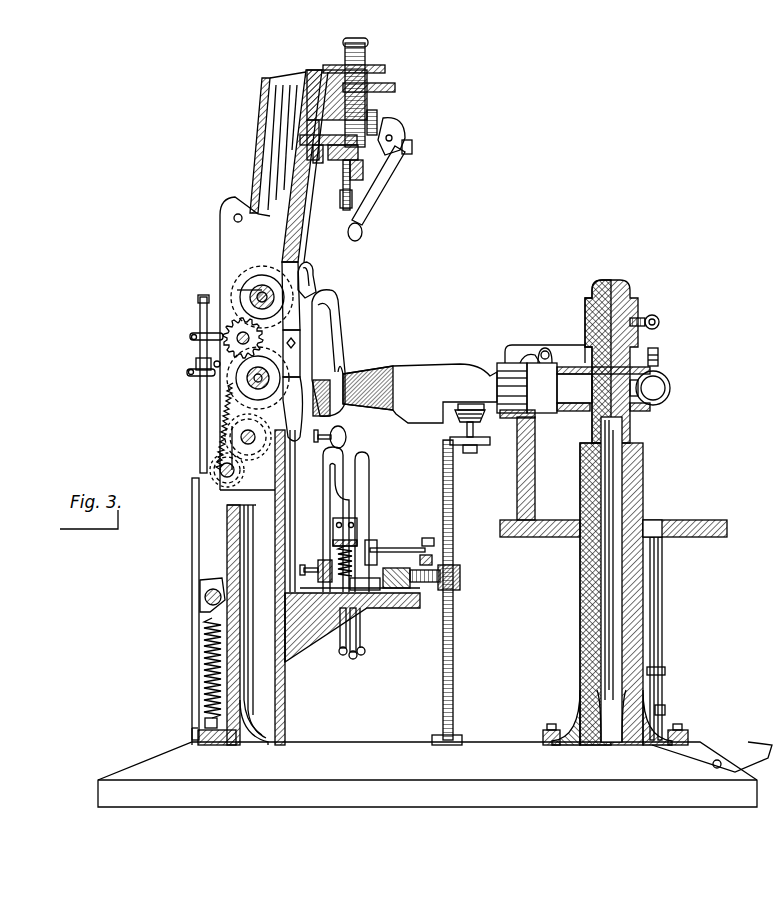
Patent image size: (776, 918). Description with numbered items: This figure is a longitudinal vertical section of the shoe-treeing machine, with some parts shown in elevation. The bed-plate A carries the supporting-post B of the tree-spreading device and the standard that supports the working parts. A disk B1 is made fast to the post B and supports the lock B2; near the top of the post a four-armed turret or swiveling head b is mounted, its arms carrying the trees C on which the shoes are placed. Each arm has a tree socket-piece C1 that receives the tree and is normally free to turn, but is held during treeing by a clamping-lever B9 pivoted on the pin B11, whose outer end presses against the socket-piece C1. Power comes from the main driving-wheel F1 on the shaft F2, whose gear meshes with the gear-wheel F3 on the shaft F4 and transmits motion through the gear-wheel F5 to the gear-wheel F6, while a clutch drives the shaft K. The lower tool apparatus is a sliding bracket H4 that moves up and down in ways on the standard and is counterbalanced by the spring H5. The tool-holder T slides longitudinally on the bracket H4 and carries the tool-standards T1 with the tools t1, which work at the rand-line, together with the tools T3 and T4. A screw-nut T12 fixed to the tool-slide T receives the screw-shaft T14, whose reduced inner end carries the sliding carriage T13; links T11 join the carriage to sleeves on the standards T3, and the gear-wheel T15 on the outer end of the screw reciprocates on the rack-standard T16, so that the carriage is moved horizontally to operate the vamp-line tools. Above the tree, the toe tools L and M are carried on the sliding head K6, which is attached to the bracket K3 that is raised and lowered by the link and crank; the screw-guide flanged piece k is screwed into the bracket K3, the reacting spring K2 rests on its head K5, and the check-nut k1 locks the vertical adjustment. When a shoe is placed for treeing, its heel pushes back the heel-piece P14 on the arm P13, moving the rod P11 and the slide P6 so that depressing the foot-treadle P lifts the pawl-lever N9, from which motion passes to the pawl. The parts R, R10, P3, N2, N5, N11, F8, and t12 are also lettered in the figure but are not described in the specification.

The bed-plate A is at (435, 774).
The supporting-post B is at (615, 512).
The disk B1 is at (712, 522).
The lock B2 is at (575, 441).
The clamping-lever B9 is at (532, 348).
The pin B11 is at (548, 350).
The four-armed turret or swiveling head b is at (645, 408).
The tree C is at (420, 408).
The tree socket-piece C1 is at (503, 366).
The arm R is at (312, 292).
The finger R10 is at (316, 278).
The foot-treadle P is at (293, 385).
The rod P11 is at (330, 322).
The arm P13 is at (338, 342).
The heel-piece P14 is at (320, 384).
The slide P6 is at (222, 360).
The rod P3 is at (200, 568).
The shaft K is at (245, 296).
The reacting spring K2 is at (345, 52).
The bracket K3 is at (300, 128).
The head of screw-guide flanged piece K5 is at (385, 70).
The sliding head K6 is at (400, 128).
The screw-guide flanged piece k is at (378, 120).
The check-nut k1 is at (395, 87).
The tool M is at (354, 177).
The tool L is at (390, 183).
The wheel N2 is at (262, 295).
The gear N5 is at (235, 337).
The pawl-lever N9 is at (220, 373).
The pin N11 is at (217, 368).
The main driving-wheel F1 is at (240, 572).
The shaft F2 is at (215, 464).
The gear-wheel F3 is at (230, 426).
The shaft F4 is at (240, 434).
The gear-wheel F5 is at (222, 397).
The gear-wheel F6 is at (237, 290).
The wheel F8 is at (258, 378).
The sliding bracket H4 is at (330, 632).
The spring H5 is at (205, 662).
The tool-holder T is at (372, 610).
The tool-standards T1 is at (322, 519).
The tool-standards T3 is at (366, 522).
The tool T4 is at (333, 528).
The links T11 is at (380, 562).
The screw-nut T12 is at (460, 572).
The sliding carriage T13 is at (388, 608).
The screw-shaft T14 is at (436, 590).
The gear-wheel T15 is at (462, 580).
The rack-standard T16 is at (457, 592).
The tool proper t1 is at (336, 434).
The rod t12 is at (303, 511).